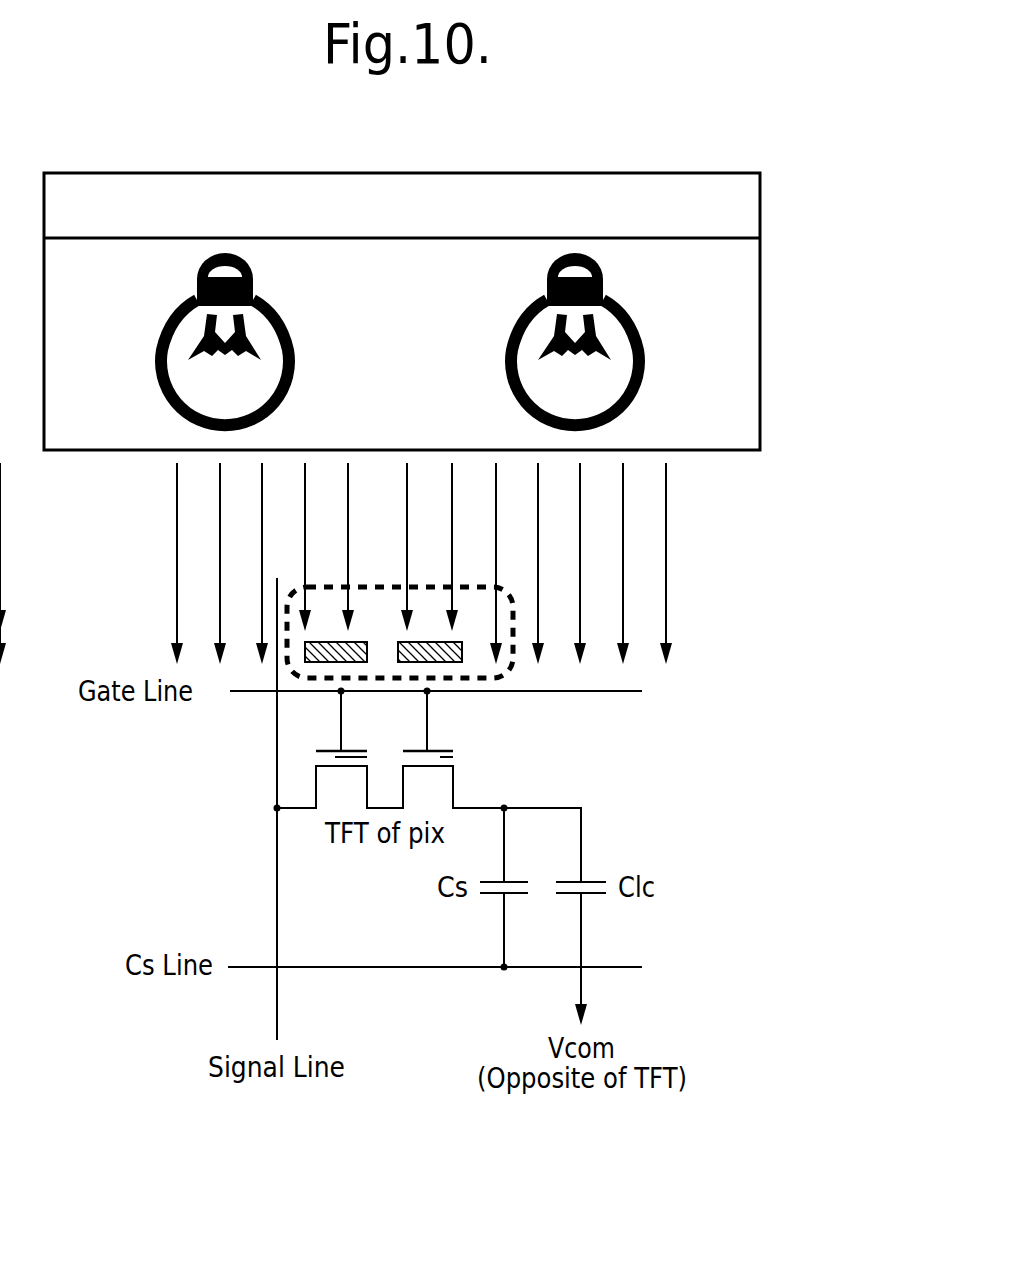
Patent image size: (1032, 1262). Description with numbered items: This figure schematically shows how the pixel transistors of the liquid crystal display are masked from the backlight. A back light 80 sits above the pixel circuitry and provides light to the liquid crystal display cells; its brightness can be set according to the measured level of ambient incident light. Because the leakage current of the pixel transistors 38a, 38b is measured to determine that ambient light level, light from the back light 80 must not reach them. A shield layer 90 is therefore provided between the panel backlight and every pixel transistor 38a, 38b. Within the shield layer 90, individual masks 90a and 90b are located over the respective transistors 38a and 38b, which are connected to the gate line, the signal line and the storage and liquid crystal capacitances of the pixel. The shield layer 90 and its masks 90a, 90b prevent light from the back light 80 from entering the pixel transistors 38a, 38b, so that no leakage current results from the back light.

The back light 80 is at (717, 289).
The shield layer 90 is at (290, 624).
The mask 90a is at (305, 658).
The mask 90b is at (462, 653).
The pixel transistor 38a is at (333, 758).
The pixel transistor 38b is at (442, 756).